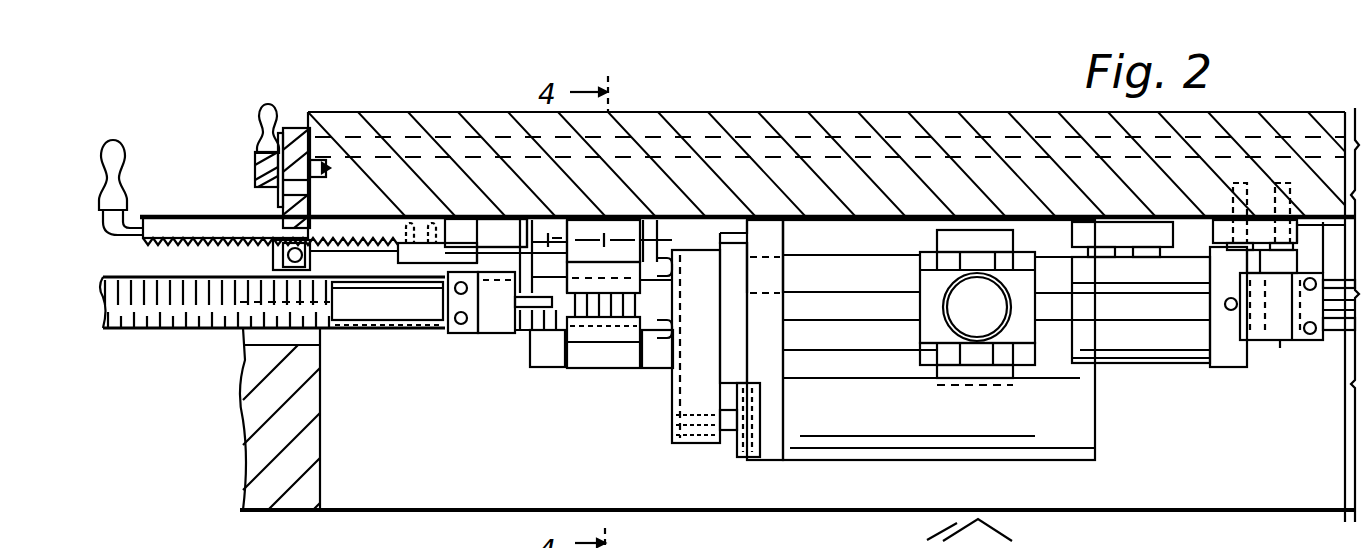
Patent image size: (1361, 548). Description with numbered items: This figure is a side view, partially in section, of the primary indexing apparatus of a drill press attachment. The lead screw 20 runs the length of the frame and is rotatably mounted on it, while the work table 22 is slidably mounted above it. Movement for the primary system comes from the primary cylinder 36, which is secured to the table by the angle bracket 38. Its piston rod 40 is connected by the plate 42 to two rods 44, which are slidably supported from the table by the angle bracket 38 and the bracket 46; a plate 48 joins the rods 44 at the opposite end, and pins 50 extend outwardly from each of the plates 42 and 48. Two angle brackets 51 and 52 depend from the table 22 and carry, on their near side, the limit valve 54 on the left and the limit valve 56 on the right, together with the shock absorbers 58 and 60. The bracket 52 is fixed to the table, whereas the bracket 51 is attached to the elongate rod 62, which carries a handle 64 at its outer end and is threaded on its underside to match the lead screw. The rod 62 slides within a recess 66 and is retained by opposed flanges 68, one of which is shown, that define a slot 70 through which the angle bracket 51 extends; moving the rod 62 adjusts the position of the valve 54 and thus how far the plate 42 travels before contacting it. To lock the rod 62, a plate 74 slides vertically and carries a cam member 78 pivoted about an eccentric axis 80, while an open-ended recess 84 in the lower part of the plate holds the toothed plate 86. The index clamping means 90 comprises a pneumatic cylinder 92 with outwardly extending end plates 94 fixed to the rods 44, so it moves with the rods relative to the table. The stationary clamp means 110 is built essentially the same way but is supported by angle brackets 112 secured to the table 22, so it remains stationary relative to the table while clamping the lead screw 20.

The lead screw 20 is at (166, 330).
The work table 22 is at (882, 152).
The primary cylinder 36 is at (921, 423).
The angle bracket 38 is at (757, 228).
The piston rod 40 is at (730, 431).
The plate 42 is at (681, 389).
The rods 44 is at (870, 331).
The bracket 46 is at (1060, 228).
The plate 48 is at (1227, 268).
The pins 50 is at (699, 307).
The angle bracket 51 is at (457, 257).
The angle bracket 52 is at (1313, 234).
The limit valve 54 is at (490, 324).
The limit valve 56 is at (1277, 338).
The shock absorber 58 is at (381, 300).
The shock absorber 60 is at (1338, 338).
The elongate rod 62 is at (181, 224).
The handle 64 is at (118, 176).
The recess 66 is at (493, 229).
The opposed flanges 68 is at (521, 219).
The slot 70 is at (426, 251).
The plate 74 is at (297, 125).
The cam member 78 is at (300, 160).
The eccentric axis 80 is at (320, 174).
The open-ended recess 84 is at (282, 246).
The toothed plate 86 is at (311, 258).
The index clamping means 90 is at (1027, 355).
The pneumatic cylinder 92 is at (988, 321).
The end plates 94 is at (923, 251).
The stationary clamp means 110 is at (613, 262).
The angle brackets 112 is at (650, 356).